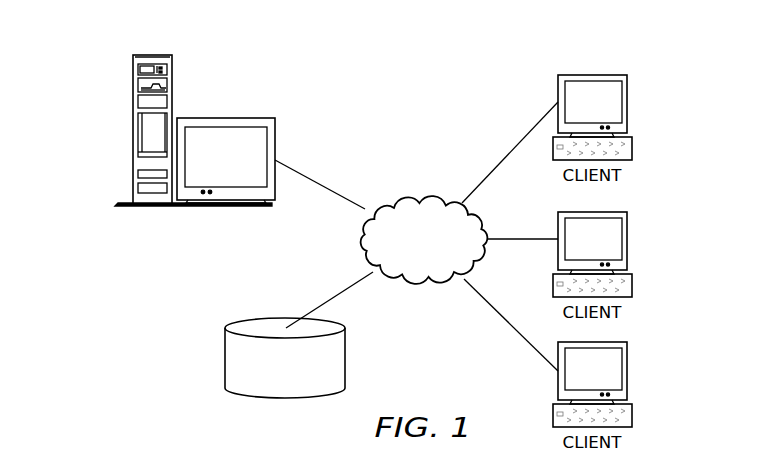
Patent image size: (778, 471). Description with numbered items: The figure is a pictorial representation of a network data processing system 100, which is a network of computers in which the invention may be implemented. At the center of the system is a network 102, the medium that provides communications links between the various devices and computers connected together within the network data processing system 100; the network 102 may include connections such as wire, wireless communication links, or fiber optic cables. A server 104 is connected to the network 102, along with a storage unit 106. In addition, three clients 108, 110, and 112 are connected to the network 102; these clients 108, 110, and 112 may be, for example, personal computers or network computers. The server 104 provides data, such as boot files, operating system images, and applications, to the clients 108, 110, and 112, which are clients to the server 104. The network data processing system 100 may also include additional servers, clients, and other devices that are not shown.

The network data processing system 100 is at (472, 85).
The network 102 is at (397, 193).
The server 104 is at (134, 131).
The storage unit 106 is at (225, 357).
The client 108 is at (628, 103).
The client 110 is at (628, 238).
The client 112 is at (628, 372).